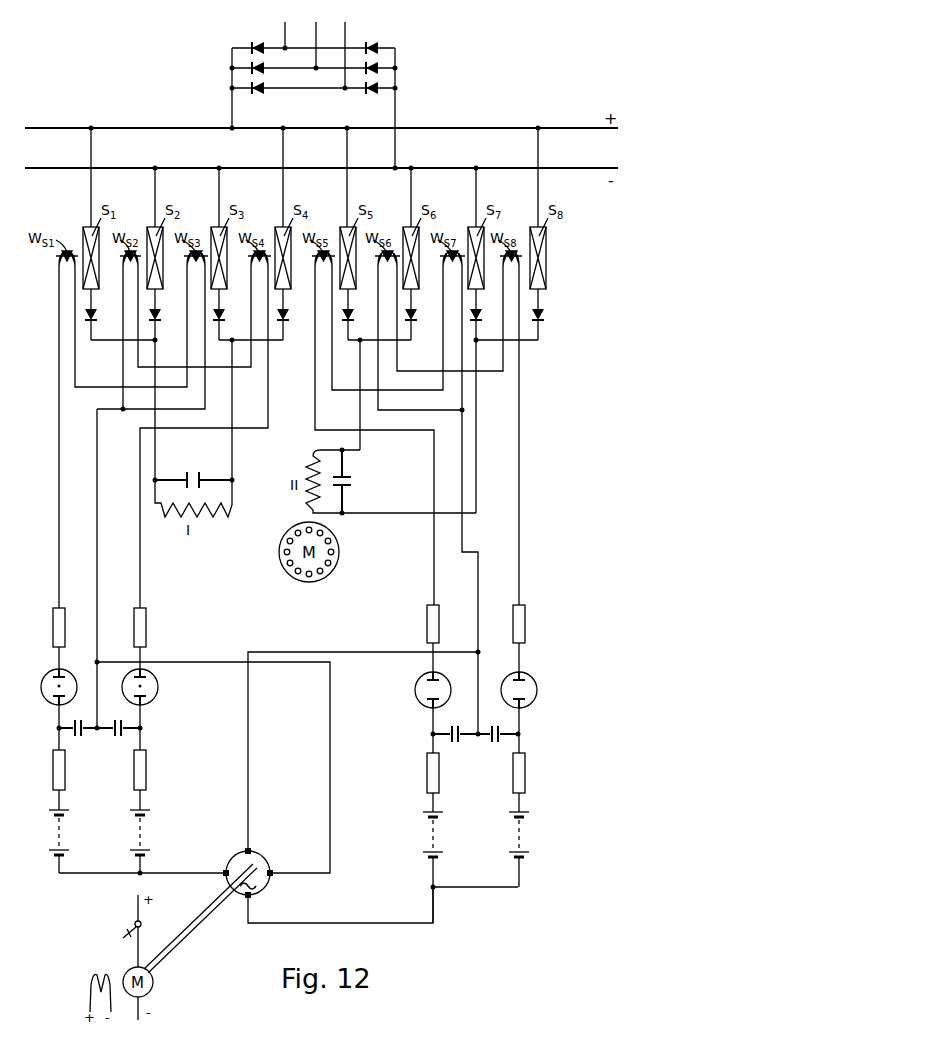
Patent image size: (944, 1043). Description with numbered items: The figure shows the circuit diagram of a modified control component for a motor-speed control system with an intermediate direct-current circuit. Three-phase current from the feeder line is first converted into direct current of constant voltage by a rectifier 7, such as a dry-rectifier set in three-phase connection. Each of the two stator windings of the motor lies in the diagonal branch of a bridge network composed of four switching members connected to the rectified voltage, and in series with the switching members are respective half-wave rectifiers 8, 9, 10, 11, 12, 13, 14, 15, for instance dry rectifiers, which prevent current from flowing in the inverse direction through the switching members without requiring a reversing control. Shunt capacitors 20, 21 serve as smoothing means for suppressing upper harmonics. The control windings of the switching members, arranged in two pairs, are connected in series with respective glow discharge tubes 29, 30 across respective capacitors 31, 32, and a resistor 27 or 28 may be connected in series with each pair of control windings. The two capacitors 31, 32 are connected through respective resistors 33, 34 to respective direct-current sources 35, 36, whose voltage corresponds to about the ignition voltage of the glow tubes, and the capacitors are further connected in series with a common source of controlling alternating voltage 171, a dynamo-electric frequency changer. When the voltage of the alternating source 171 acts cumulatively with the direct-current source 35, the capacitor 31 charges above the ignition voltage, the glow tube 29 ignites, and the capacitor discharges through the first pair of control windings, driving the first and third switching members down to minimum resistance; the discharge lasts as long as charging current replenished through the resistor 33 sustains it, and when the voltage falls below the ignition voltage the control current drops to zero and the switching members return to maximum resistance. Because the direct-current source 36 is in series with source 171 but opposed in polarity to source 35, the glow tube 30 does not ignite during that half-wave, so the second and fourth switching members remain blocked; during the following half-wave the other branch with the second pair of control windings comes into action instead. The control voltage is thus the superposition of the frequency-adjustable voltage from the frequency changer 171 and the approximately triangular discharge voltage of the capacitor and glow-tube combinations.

The rectifier 7 is at (322, 88).
The half-wave rectifier 8 is at (96, 324).
The half-wave rectifier 9 is at (160, 324).
The half-wave rectifier 10 is at (229, 324).
The half-wave rectifier 11 is at (293, 324).
The half-wave rectifier 12 is at (358, 324).
The half-wave rectifier 13 is at (421, 324).
The half-wave rectifier 14 is at (486, 324).
The half-wave rectifier 15 is at (548, 324).
The shunt capacitor 20 is at (194, 471).
The shunt capacitor 21 is at (350, 482).
The resistor 27 is at (56, 624).
The resistor 28 is at (143, 627).
The glow discharge tube 29 is at (47, 676).
The glow discharge tube 30 is at (150, 688).
The capacitor 31 is at (79, 736).
The capacitor 32 is at (118, 736).
The resistor 33 is at (56, 770).
The resistor 34 is at (143, 770).
The direct-current source 35 is at (55, 831).
The direct-current source 36 is at (143, 831).
The source of controlling alternating voltage 171 is at (262, 868).